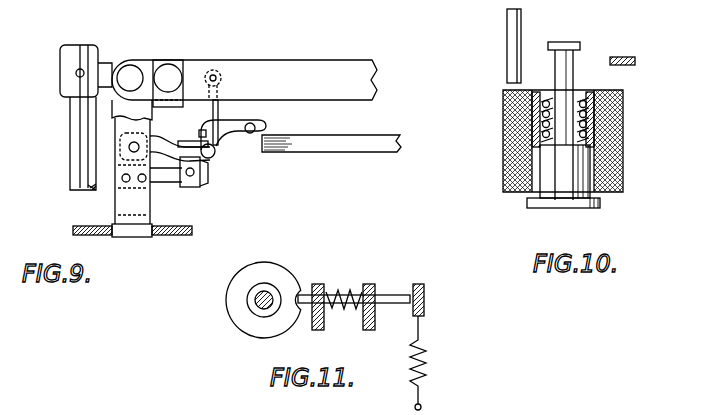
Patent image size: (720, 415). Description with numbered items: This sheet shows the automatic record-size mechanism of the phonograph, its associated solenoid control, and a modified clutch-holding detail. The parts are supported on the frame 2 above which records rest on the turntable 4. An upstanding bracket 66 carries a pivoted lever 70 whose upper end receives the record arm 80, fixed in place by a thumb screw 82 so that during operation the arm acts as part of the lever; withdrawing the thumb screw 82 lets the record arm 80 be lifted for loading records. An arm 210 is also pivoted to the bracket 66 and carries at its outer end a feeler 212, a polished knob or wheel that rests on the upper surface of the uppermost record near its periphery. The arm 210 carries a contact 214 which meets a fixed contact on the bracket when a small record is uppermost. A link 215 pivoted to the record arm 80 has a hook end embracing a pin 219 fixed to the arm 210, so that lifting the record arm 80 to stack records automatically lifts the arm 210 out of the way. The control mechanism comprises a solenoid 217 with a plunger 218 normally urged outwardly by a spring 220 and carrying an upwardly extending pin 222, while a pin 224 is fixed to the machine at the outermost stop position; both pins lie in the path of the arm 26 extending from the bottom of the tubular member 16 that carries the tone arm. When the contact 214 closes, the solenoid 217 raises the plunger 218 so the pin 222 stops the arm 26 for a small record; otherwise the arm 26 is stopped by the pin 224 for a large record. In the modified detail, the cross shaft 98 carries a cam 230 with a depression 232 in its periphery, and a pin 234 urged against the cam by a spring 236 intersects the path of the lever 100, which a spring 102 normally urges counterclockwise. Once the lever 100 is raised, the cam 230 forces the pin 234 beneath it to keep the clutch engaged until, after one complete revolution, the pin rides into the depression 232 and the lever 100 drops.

In FIG. 9, the frame 2 is at (165, 236).
In FIG. 9, the turntable 4 is at (338, 152).
In FIG. 9, the tubular member 16 is at (72, 192).
In FIG. 10, the arm 26 is at (637, 61).
In FIG. 9, the bracket 66 is at (120, 160).
In FIG. 9, the lever 70 is at (118, 108).
In FIG. 9, the record arm 80 is at (272, 60).
In FIG. 9, the thumb screw 82 is at (180, 64).
In FIG. 11, the cross shaft 98 is at (256, 300).
In FIG. 11, the lever 100 is at (426, 302).
In FIG. 11, the spring 102 is at (426, 360).
In FIG. 9, the arm 210 is at (228, 144).
In FIG. 9, the feeler 212 is at (262, 130).
In FIG. 9, the contact 214 is at (206, 183).
In FIG. 9, the link 215 is at (219, 112).
In FIG. 9, the solenoid 217 is at (182, 137).
In FIG. 10, the solenoid 217 is at (624, 127).
In FIG. 10, the plunger 218 is at (572, 170).
In FIG. 9, the pin 219 is at (190, 183).
In FIG. 10, the spring 220 is at (624, 100).
In FIG. 10, the pin 222 is at (563, 80).
In FIG. 10, the pin 224 is at (507, 62).
In FIG. 11, the cam 230 is at (282, 270).
In FIG. 11, the depression 232 is at (301, 296).
In FIG. 11, the pin 234 is at (330, 292).
In FIG. 11, the spring 236 is at (347, 306).